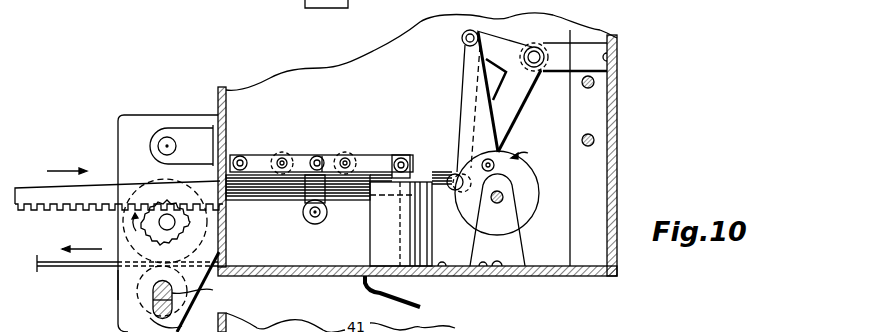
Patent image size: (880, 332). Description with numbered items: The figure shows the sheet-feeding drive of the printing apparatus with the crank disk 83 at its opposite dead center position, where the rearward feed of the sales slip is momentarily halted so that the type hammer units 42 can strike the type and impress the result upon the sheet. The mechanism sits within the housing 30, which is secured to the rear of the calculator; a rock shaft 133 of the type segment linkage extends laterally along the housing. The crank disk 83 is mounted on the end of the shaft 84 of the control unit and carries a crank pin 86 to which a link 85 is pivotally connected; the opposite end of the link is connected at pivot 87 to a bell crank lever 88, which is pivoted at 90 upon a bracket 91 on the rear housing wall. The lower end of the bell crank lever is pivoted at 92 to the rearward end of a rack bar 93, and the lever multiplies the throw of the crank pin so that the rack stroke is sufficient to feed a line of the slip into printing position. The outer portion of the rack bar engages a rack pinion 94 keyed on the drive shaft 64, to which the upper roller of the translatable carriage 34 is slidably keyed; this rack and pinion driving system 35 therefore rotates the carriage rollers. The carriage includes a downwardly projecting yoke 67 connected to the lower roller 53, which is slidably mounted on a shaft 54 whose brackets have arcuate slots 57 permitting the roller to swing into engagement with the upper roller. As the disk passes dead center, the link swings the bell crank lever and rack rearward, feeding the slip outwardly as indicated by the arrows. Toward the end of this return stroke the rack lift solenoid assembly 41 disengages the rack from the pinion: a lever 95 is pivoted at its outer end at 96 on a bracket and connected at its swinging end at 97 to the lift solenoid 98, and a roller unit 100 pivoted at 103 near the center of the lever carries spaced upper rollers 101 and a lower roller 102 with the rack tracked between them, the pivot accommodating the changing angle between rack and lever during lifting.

The housing 30 is at (617, 92).
The translatable carriage 34 is at (141, 131).
The rack and pinion driving system 35 is at (102, 180).
The rack lift solenoid assembly 41 is at (369, 153).
The type hammer units 42 is at (420, 297).
The lower roller 53 is at (198, 292).
The shaft 54 is at (200, 296).
The arcuate slots 57 is at (152, 313).
The drive shaft 64 is at (176, 222).
The yoke 67 is at (127, 286).
The crank disk 83 is at (531, 187).
The shaft 84 is at (496, 205).
The link 85 is at (471, 88).
The crank pin 86 is at (495, 167).
The pivotal connection 87 is at (462, 39).
The bell crank lever 88 is at (510, 100).
The pivot 90 is at (537, 47).
The bracket 91 is at (585, 50).
The pivot 92 is at (456, 176).
The rack bar 93 is at (278, 200).
The rack pinion 94 is at (155, 236).
The lever 95 is at (282, 155).
The pivot 96 is at (240, 156).
The pivotal connection 97 is at (401, 158).
The lift solenoid 98 is at (425, 240).
The roller unit 100 is at (353, 197).
The upper rollers 101 is at (292, 150).
The lower roller 102 is at (325, 225).
The pivot 103 is at (322, 154).
The rock shaft 133 is at (595, 140).